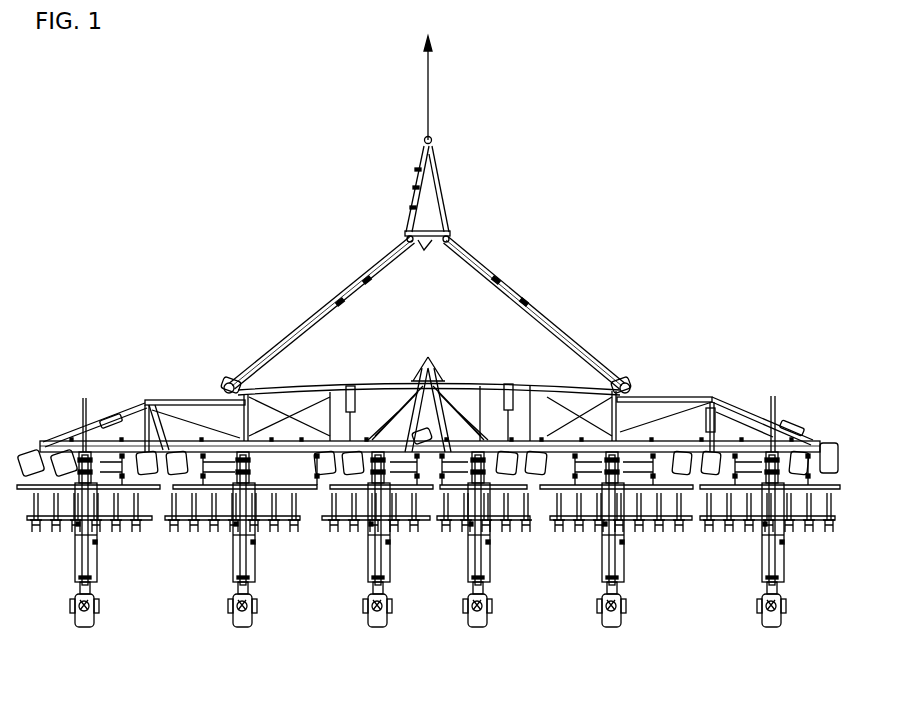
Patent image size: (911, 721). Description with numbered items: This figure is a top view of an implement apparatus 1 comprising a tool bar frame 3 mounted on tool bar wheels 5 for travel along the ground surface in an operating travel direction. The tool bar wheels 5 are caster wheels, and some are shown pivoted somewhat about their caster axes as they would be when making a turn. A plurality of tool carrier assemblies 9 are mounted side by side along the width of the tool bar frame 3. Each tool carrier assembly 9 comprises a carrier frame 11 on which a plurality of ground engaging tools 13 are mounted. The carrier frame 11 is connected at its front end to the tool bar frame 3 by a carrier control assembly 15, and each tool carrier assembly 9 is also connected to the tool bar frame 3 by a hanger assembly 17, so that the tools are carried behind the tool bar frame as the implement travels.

The implement apparatus 1 is at (562, 212).
The tool bar frame 3 is at (683, 398).
The tool bar wheels 5 is at (832, 440).
The tool carrier assembly 9 is at (352, 556).
The carrier frame 11 is at (335, 520).
The ground engaging tools 13 is at (417, 533).
The carrier control assembly 15 is at (607, 473).
The hanger assembly 17 is at (653, 460).